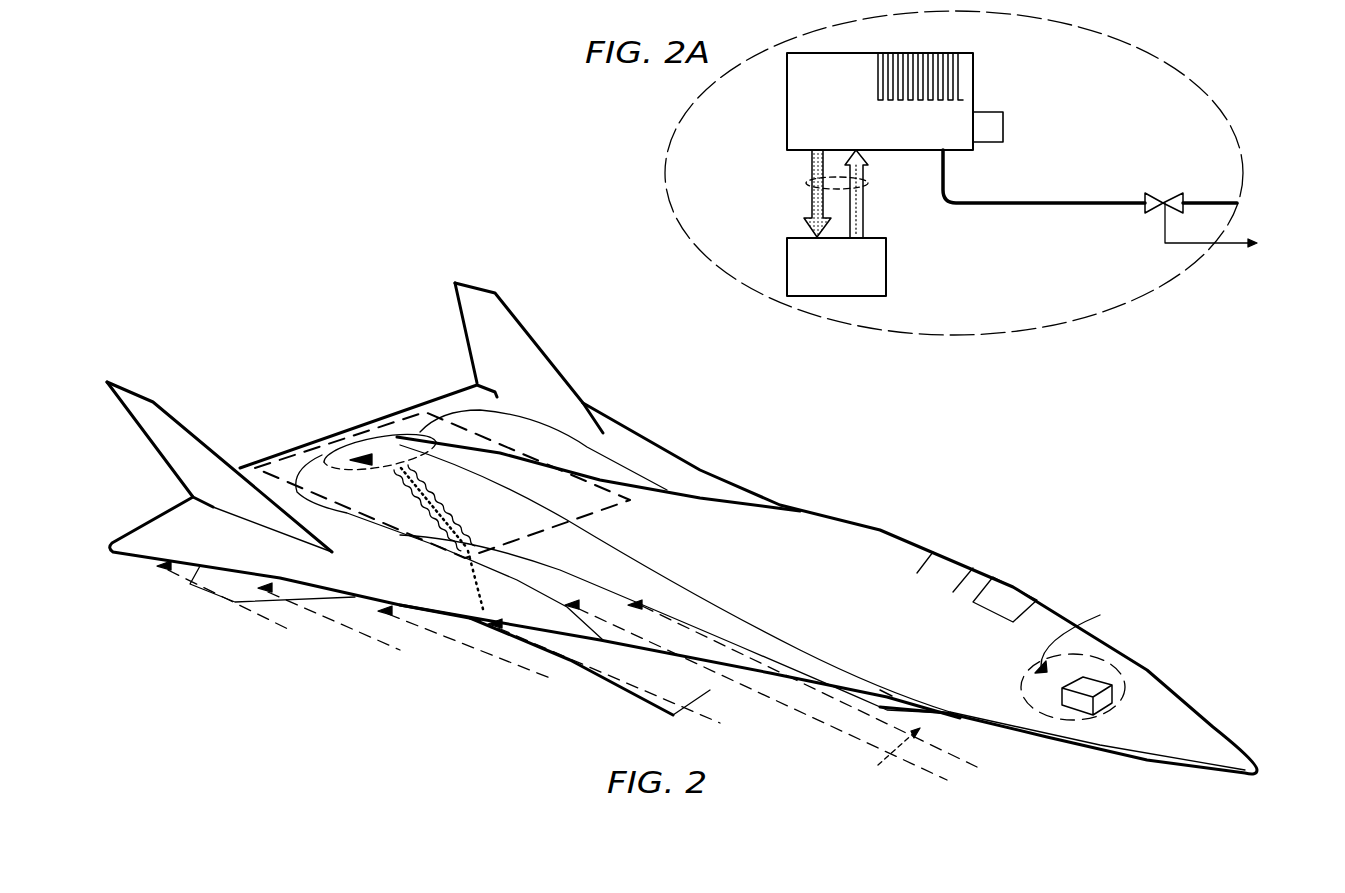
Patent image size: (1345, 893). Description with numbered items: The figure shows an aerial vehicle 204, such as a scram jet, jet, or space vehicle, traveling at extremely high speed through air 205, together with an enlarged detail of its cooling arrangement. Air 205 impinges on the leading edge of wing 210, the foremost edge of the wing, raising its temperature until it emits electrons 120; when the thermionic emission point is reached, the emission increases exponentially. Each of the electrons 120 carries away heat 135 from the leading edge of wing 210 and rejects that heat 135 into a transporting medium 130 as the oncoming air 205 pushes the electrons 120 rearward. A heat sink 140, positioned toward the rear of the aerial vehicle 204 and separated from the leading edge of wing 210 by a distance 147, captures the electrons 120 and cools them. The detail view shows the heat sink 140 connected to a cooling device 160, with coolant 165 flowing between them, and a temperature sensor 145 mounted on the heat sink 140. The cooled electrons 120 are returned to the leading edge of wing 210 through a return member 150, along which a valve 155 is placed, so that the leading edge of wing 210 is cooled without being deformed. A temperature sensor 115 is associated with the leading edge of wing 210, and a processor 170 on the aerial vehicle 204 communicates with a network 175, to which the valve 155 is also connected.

In FIG. 2, the temperature sensor 115 is at (888, 694).
In FIG. 2, the electrons 120 is at (392, 468).
In FIG. 2, the transporting medium 130 is at (652, 505).
In FIG. 2, the heat 135 is at (440, 500).
In FIG. 2A, the heat sink 140 is at (851, 137).
In FIG. 2A, the temperature sensor 145 is at (1037, 146).
In FIG. 2, the distance 147 is at (410, 603).
In FIG. 2A, the return member 150 is at (1010, 228).
In FIG. 2A, the valve 155 is at (1145, 207).
In FIG. 2A, the cooling device 160 is at (912, 277).
In FIG. 2A, the coolant 165 is at (808, 183).
In FIG. 2, the processor 170 is at (1107, 700).
In FIG. 2A, the network 175 is at (1254, 242).
In FIG. 2, the network 175 is at (1091, 606).
In FIG. 2, the aerial vehicle 204 is at (941, 501).
In FIG. 2, the air 205 is at (888, 750).
In FIG. 2, the leading edge of wing 210 is at (438, 612).